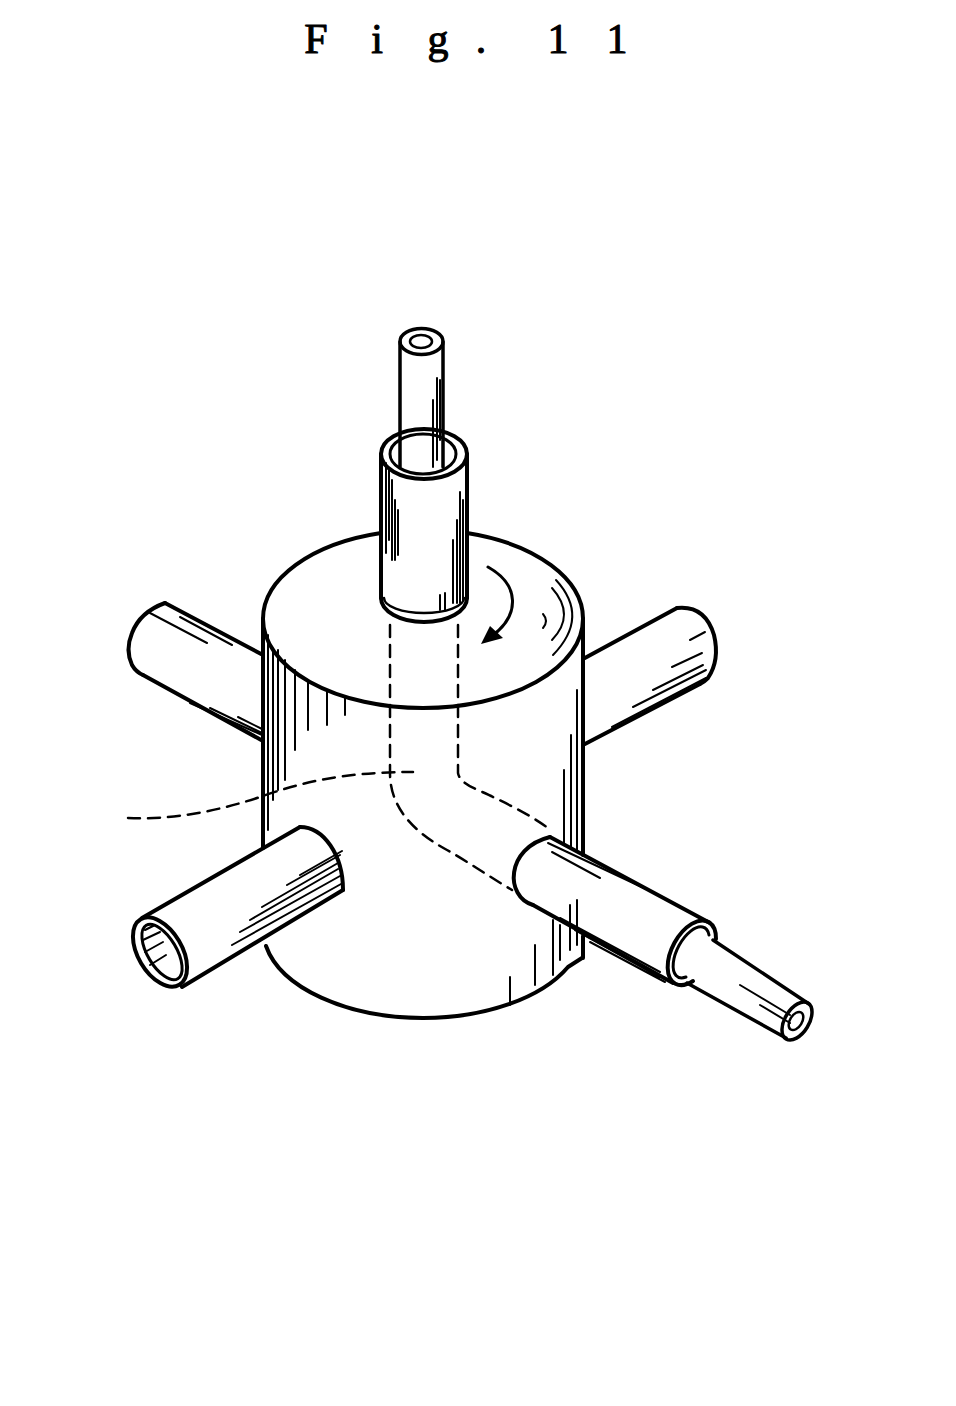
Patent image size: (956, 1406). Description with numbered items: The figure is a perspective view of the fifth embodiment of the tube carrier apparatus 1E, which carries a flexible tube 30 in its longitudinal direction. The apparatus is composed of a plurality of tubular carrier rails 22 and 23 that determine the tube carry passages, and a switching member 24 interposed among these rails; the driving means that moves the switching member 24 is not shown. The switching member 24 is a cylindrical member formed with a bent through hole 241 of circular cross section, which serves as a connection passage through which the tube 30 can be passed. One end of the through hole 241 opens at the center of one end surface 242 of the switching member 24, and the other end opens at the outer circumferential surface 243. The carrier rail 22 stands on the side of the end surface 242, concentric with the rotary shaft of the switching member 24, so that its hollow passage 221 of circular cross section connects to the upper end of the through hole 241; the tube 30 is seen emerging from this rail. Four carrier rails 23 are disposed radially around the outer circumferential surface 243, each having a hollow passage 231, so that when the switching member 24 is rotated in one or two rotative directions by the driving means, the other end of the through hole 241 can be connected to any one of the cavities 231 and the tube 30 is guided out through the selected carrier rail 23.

The tube carrier apparatus 1E is at (692, 332).
The carrier rail 22 is at (403, 510).
The hollow passage 221 is at (393, 447).
The carrier rail 23 is at (160, 640).
The hollow passage 231 is at (150, 982).
The switching member 24 is at (514, 1012).
The through hole 241 is at (302, 757).
The end surface 242 is at (532, 583).
The outer circumferential surface 243 is at (437, 955).
The flexible tube 30 is at (427, 397).